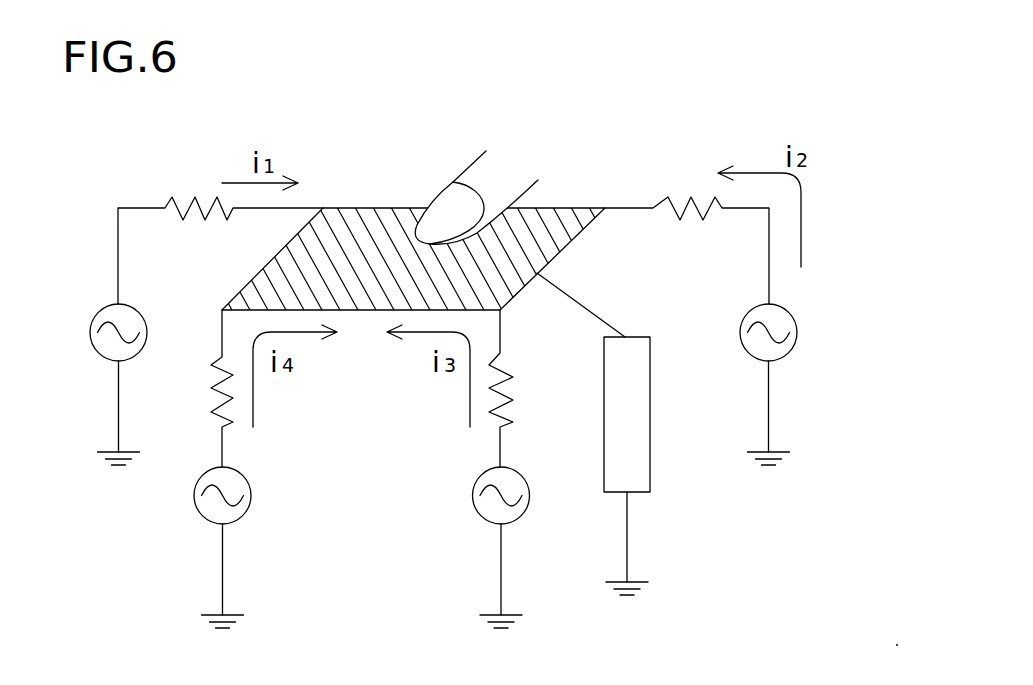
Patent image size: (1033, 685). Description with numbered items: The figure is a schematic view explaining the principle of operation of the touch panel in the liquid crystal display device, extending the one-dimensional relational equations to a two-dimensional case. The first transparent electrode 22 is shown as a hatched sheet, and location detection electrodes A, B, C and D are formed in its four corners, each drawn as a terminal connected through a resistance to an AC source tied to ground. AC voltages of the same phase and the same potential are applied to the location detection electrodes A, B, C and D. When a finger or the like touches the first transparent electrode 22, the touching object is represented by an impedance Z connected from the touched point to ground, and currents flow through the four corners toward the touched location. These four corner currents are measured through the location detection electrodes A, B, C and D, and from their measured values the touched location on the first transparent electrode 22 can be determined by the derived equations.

The first transparent electrode 22 is at (382, 217).
The location detection electrode A is at (212, 319).
The location detection electrode B is at (696, 319).
The location detection electrode C is at (222, 459).
The location detection electrode D is at (503, 467).
The impedance of touching object Z is at (593, 434).